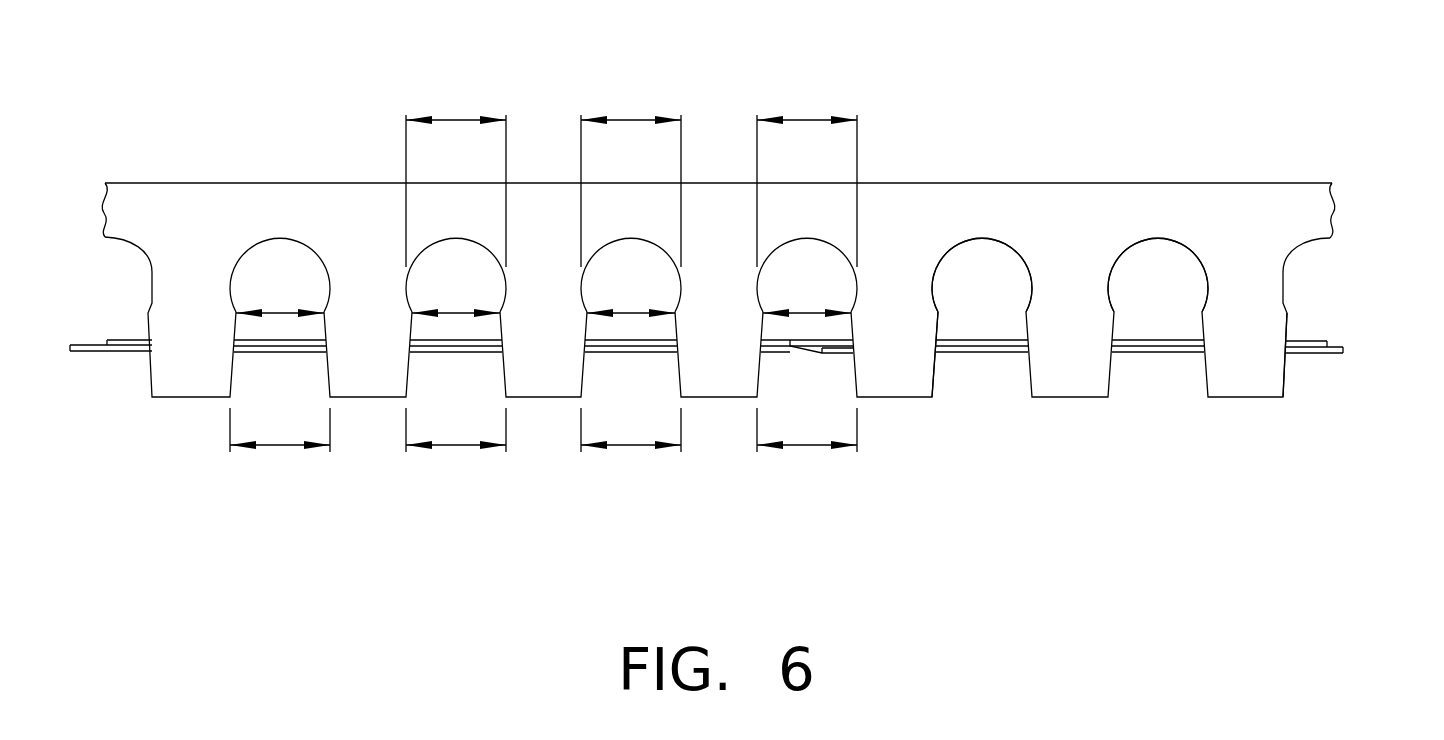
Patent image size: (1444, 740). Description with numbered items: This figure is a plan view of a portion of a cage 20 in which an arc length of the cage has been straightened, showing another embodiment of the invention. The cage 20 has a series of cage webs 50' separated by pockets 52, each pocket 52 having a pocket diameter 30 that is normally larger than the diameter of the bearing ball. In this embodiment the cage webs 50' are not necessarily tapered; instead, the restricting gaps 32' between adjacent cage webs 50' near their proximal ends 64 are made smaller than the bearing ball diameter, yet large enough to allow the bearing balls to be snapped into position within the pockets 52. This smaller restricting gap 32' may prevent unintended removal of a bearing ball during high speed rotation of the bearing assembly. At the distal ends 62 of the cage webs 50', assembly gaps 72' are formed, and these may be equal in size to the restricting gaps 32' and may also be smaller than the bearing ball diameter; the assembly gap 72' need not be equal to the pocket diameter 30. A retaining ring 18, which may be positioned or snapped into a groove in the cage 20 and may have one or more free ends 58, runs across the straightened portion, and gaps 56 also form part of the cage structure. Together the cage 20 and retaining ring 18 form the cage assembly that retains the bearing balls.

The cage 20 is at (165, 100).
The retaining ring 18 is at (993, 352).
The pocket diameter 30 is at (452, 120).
The restricting gap 32' is at (543, 285).
The cage web 50' is at (717, 375).
The pocket 52 is at (306, 252).
The gap 56 is at (1202, 372).
The free end 58 is at (822, 295).
The distal end 62 is at (931, 397).
The proximal end 64 is at (937, 310).
The assembly gap 72' is at (543, 461).